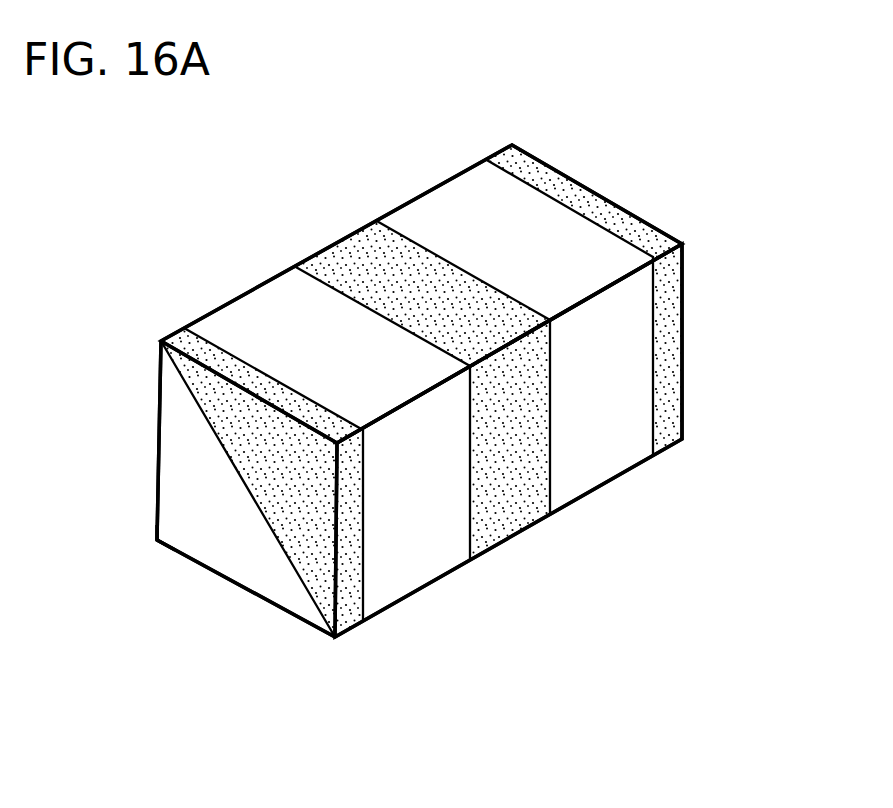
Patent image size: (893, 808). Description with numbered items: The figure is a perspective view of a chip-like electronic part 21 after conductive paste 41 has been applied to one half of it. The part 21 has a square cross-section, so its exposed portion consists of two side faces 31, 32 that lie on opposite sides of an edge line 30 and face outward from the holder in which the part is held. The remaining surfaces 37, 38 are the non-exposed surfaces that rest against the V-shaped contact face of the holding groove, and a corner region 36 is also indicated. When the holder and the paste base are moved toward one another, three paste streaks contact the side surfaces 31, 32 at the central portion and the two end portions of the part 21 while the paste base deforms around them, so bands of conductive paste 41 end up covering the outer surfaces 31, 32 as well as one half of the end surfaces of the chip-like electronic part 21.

The chip-like electronic part 21 is at (200, 236).
The edge line 30 is at (628, 268).
The side face 31 is at (550, 247).
The side face 32 is at (605, 422).
The conductive paste 41 is at (233, 360).
The corner portion 36 is at (157, 540).
The non-exposed surface 37 is at (233, 583).
The non-exposed surface 38 is at (157, 475).